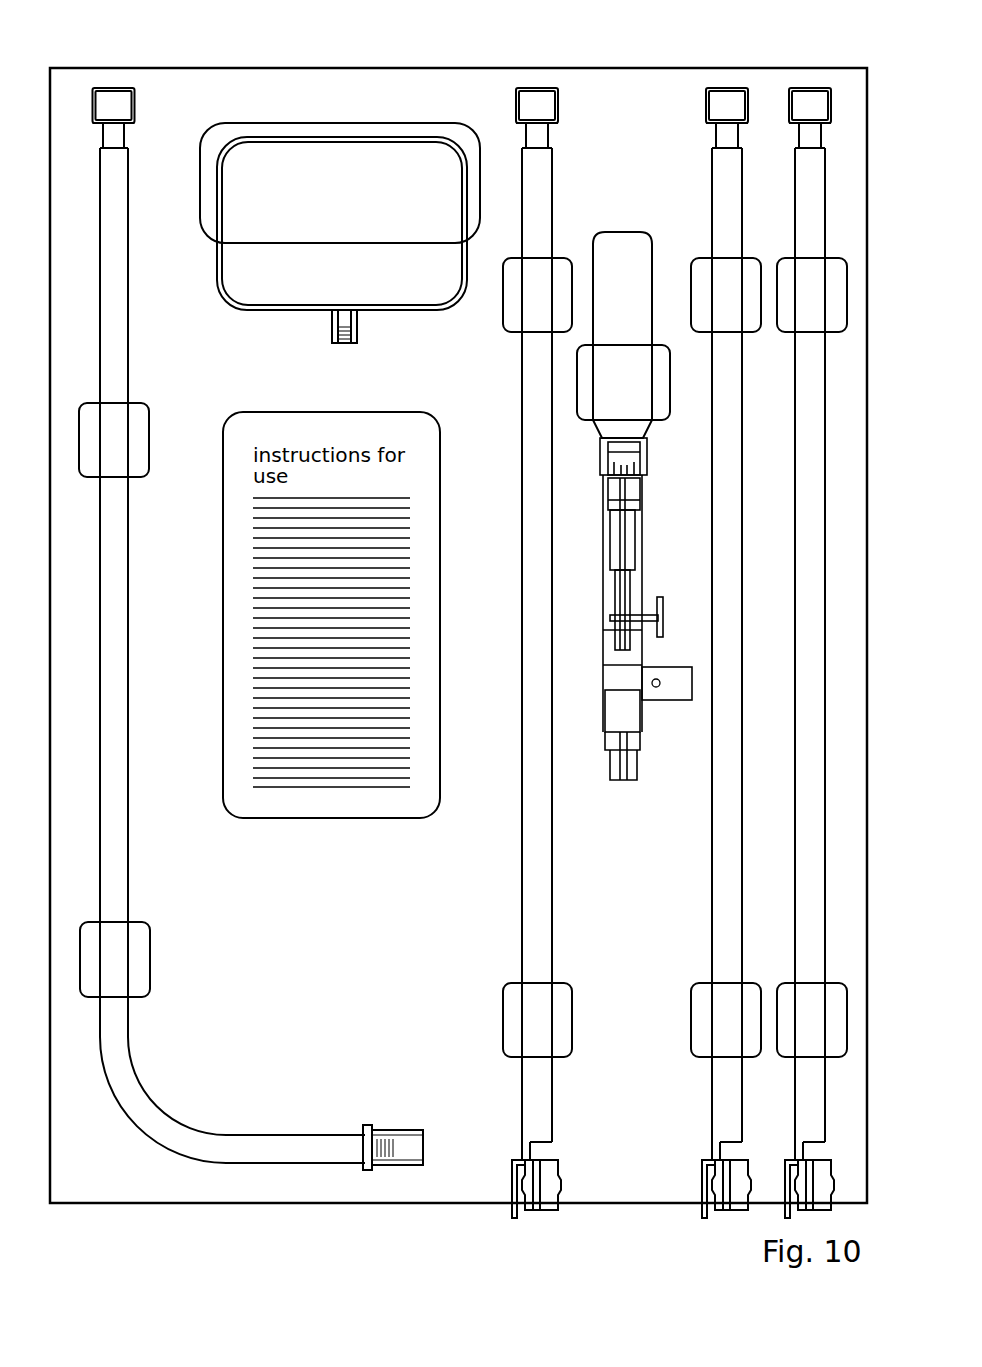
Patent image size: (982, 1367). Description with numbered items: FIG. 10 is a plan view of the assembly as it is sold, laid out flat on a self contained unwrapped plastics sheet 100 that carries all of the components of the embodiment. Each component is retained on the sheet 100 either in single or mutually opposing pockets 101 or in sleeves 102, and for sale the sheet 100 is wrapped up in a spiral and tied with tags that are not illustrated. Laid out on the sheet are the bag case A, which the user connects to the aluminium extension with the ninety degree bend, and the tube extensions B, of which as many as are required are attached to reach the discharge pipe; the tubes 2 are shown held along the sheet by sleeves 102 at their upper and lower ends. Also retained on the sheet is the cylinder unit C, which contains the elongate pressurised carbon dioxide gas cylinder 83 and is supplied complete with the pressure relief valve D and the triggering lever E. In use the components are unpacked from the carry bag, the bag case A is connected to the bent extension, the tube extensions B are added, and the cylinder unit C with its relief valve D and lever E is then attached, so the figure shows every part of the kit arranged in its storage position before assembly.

The plastics sheet 100 is at (98, 1173).
The pocket 101 is at (393, 123).
The sleeve 102 is at (512, 999).
The tube 2 is at (673, 653).
The pressurised carbon dioxide gas cylinder 83 is at (620, 473).
The bag case A is at (282, 308).
The tube extension B is at (798, 432).
The cylinder unit C is at (598, 325).
The pressure relief valve D is at (668, 690).
The triggering lever E is at (663, 612).